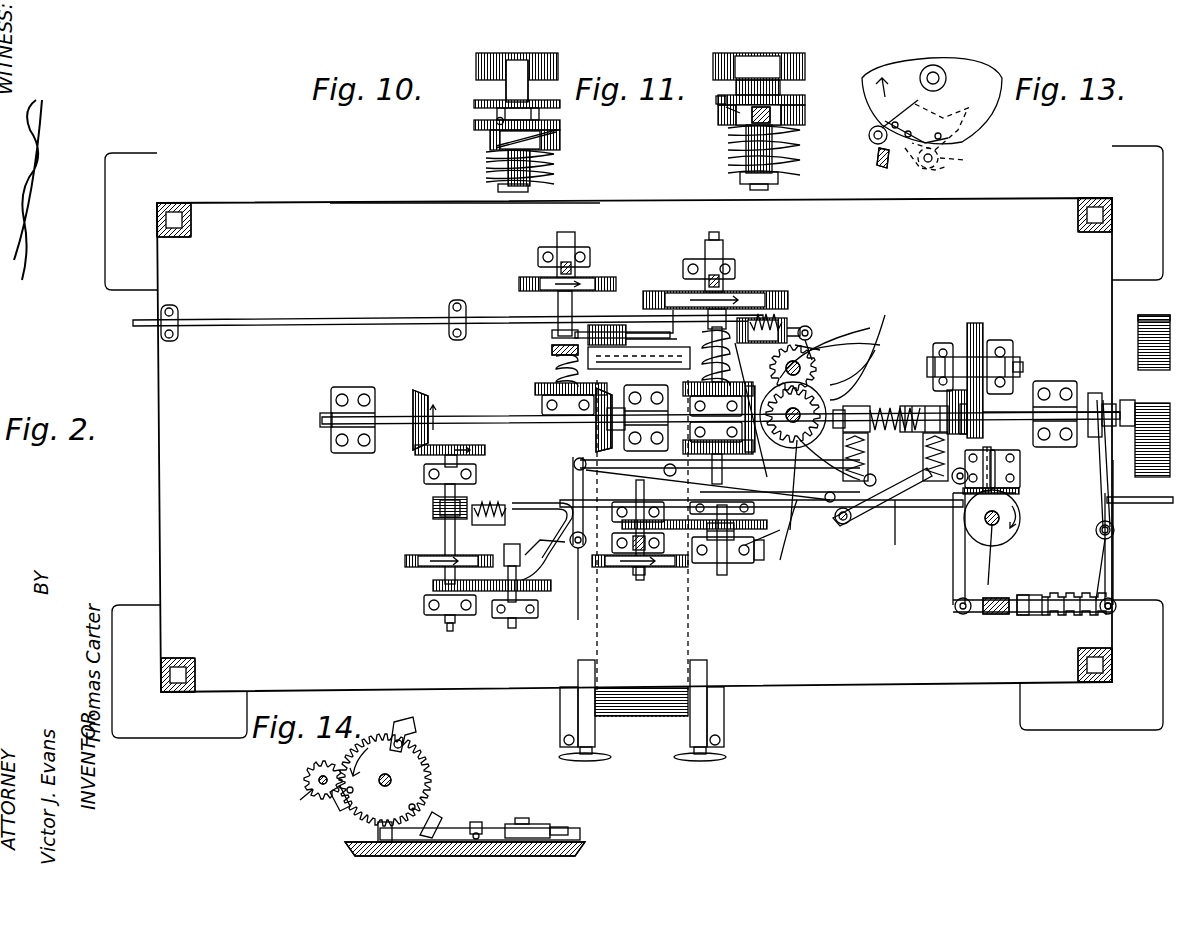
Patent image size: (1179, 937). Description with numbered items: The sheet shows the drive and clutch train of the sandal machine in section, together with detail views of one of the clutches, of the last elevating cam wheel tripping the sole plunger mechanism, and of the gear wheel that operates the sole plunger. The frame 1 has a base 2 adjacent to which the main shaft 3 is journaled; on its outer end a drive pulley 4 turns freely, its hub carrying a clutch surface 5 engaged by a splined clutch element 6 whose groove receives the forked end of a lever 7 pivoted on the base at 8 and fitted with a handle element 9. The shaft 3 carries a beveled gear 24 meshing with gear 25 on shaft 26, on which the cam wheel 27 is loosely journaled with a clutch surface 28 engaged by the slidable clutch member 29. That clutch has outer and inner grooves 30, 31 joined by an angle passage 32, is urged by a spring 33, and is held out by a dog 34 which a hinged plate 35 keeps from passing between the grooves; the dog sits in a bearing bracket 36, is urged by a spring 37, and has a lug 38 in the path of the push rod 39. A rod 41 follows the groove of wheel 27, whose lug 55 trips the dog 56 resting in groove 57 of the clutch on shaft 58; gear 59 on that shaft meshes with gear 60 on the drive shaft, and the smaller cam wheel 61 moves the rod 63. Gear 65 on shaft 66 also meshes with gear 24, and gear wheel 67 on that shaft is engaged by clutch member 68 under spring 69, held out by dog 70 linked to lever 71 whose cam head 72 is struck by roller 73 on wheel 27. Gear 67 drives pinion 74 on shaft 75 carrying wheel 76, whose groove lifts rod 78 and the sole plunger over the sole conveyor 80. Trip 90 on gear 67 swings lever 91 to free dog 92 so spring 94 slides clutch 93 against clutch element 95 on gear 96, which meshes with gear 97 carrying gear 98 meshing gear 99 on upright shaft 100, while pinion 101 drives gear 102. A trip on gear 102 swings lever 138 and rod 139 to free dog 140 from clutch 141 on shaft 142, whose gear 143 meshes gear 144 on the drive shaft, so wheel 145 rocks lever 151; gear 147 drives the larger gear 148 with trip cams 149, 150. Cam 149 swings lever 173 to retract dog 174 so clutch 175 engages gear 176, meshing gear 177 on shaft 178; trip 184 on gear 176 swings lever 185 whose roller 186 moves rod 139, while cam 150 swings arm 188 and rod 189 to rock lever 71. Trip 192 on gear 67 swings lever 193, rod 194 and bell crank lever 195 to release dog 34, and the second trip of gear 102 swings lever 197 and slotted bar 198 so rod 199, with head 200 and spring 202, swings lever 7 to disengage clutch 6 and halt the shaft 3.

In FIG. 2, the frame 1 is at (182, 240).
In FIG. 2, the base 2 is at (398, 214).
In FIG. 2, the shaft 3 is at (388, 414).
In FIG. 2, the drive pulley 4 is at (1138, 352).
In FIG. 2, the clutch surface 5 is at (1138, 400).
In FIG. 2, the clutch element 6 is at (1096, 402).
In FIG. 2, the lever 7 is at (1100, 480).
In FIG. 2, the pivot 8 is at (1112, 536).
In FIG. 2, the outwardly extending element 9 is at (1152, 506).
In FIG. 2, the beveled gear 24 is at (770, 368).
In FIG. 2, the beveled gear 25 is at (655, 350).
In FIG. 10, the shaft 26 is at (530, 186).
In FIG. 11, the shaft 26 is at (780, 178).
In FIG. 2, the shaft 26 is at (716, 255).
In FIG. 13, the wheel 27 is at (980, 108).
In FIG. 2, the wheel 27 is at (775, 320).
In FIG. 10, the clutch surface 28 is at (478, 66).
In FIG. 11, the clutch surface 28 is at (785, 66).
In FIG. 2, the clutch surface 28 is at (680, 292).
In FIG. 10, the clutch member 29 is at (480, 106).
In FIG. 11, the clutch member 29 is at (782, 84).
In FIG. 2, the clutch member 29 is at (675, 330).
In FIG. 10, the groove 30 is at (492, 114).
In FIG. 11, the groove 30 is at (800, 98).
In FIG. 10, the groove 31 is at (492, 130).
In FIG. 11, the groove 31 is at (805, 114).
In FIG. 10, the angle passage 32 is at (558, 136).
In FIG. 11, the angle passage 32 is at (750, 110).
In FIG. 10, the spring 33 is at (556, 160).
In FIG. 11, the spring 33 is at (790, 136).
In FIG. 11, the rod or dog 34 is at (735, 118).
In FIG. 2, the rod or dog 34 is at (725, 318).
In FIG. 10, the hinged plate 35 is at (504, 120).
In FIG. 11, the hinged plate 35 is at (716, 100).
In FIG. 2, the bearing bracket 36 is at (812, 325).
In FIG. 2, the spring 37 is at (795, 318).
In FIG. 2, the lug or enlargement 38 is at (805, 340).
In FIG. 2, the push rod 39 is at (347, 318).
In FIG. 2, the rod 41 is at (707, 268).
In FIG. 13, the lug 55 is at (935, 120).
In FIG. 2, the dog or rod 56 is at (636, 362).
In FIG. 2, the groove 57 is at (552, 350).
In FIG. 2, the shaft 58 is at (562, 246).
In FIG. 2, the beveled gear 59 is at (535, 389).
In FIG. 2, the gear 60 is at (597, 438).
In FIG. 2, the wheel 61 is at (530, 290).
In FIG. 2, the rod 63 is at (572, 262).
In FIG. 2, the gear 65 is at (681, 433).
In FIG. 2, the shaft 66 is at (730, 570).
In FIG. 14, the shaft 66 is at (382, 769).
In FIG. 2, the gear wheel 67 is at (752, 548).
In FIG. 14, the gear wheel 67 is at (418, 762).
In FIG. 2, the clutch member 68 is at (770, 560).
In FIG. 2, the spring 69 is at (670, 474).
In FIG. 2, the dog or rod 70 is at (835, 500).
In FIG. 13, the link or lever 71 is at (935, 182).
In FIG. 13, the cam head 72 is at (877, 156).
In FIG. 13, the roller 73 is at (869, 133).
In FIG. 2, the pinion 74 is at (583, 560).
In FIG. 14, the pinion 74 is at (316, 790).
In FIG. 2, the shaft 75 is at (640, 568).
In FIG. 14, the shaft 75 is at (325, 775).
In FIG. 2, the wheel 76 is at (662, 567).
In FIG. 13, the rod 78 is at (966, 159).
In FIG. 2, the rod 78 is at (633, 575).
In FIG. 2, the endless conveyor 80 is at (640, 716).
In FIG. 14, the cam-shaped trip 90 is at (338, 812).
In FIG. 2, the rocker arm or pivoted lever 91 is at (895, 500).
In FIG. 14, the rocker arm or pivoted lever 91 is at (500, 826).
In FIG. 2, the dog 92 is at (850, 436).
In FIG. 2, the slidable clutch 93 is at (950, 392).
In FIG. 2, the spring 94 is at (892, 404).
In FIG. 2, the clutch element 95 is at (968, 350).
In FIG. 2, the gear 96 is at (965, 360).
In FIG. 2, the gear 97 is at (1012, 470).
In FIG. 2, the gear 98 is at (1010, 492).
In FIG. 2, the gear 99 is at (1010, 535).
In FIG. 2, the upright shaft 100 is at (1000, 590).
In FIG. 2, the pinion 101 is at (1000, 395).
In FIG. 2, the gear 102 is at (985, 345).
In FIG. 2, the rocker arm or pivoted lever 138 is at (1010, 345).
In FIG. 2, the rod 139 is at (927, 508).
In FIG. 2, the dog 140 is at (478, 474).
In FIG. 2, the slidable clutch 141 is at (433, 508).
In FIG. 2, the shaft 142 is at (452, 630).
In FIG. 2, the gear 143 is at (470, 440).
In FIG. 2, the gear 144 is at (413, 452).
In FIG. 2, the wheel 145 is at (405, 560).
In FIG. 2, the gear 147 is at (433, 594).
In FIG. 2, the gear 148 is at (522, 600).
In FIG. 2, the trip cam 149 is at (500, 618).
In FIG. 2, the trip cam 150 is at (516, 628).
In FIG. 2, the angle rod or lever 151 is at (440, 580).
In FIG. 2, the rocker lever 173 is at (556, 520).
In FIG. 2, the dog 174 is at (910, 452).
In FIG. 2, the slidable clutch 175 is at (822, 395).
In FIG. 2, the gear 176 is at (822, 380).
In FIG. 2, the gear 177 is at (870, 350).
In FIG. 2, the shaft 178 is at (808, 442).
In FIG. 2, the cam trip element 184 is at (935, 355).
In FIG. 2, the rocker arm or lever 185 is at (910, 532).
In FIG. 2, the roller 186 is at (835, 530).
In FIG. 2, the rocker arm 188 is at (535, 560).
In FIG. 2, the rod 189 is at (580, 462).
In FIG. 2, the cam trip 192 is at (720, 565).
In FIG. 14, the cam trip 192 is at (410, 722).
In FIG. 2, the pivoted lever 193 is at (780, 545).
In FIG. 14, the pivoted lever 193 is at (482, 822).
In FIG. 2, the rod 194 is at (800, 560).
In FIG. 14, the rod 194 is at (528, 822).
In FIG. 2, the bell crank lever 195 is at (840, 340).
In FIG. 2, the rocker arm or lever 197 is at (975, 340).
In FIG. 2, the bar 198 is at (996, 616).
In FIG. 2, the rod 199 is at (1033, 596).
In FIG. 2, the headed end 200 is at (1090, 612).
In FIG. 2, the spring 202 is at (1055, 618).